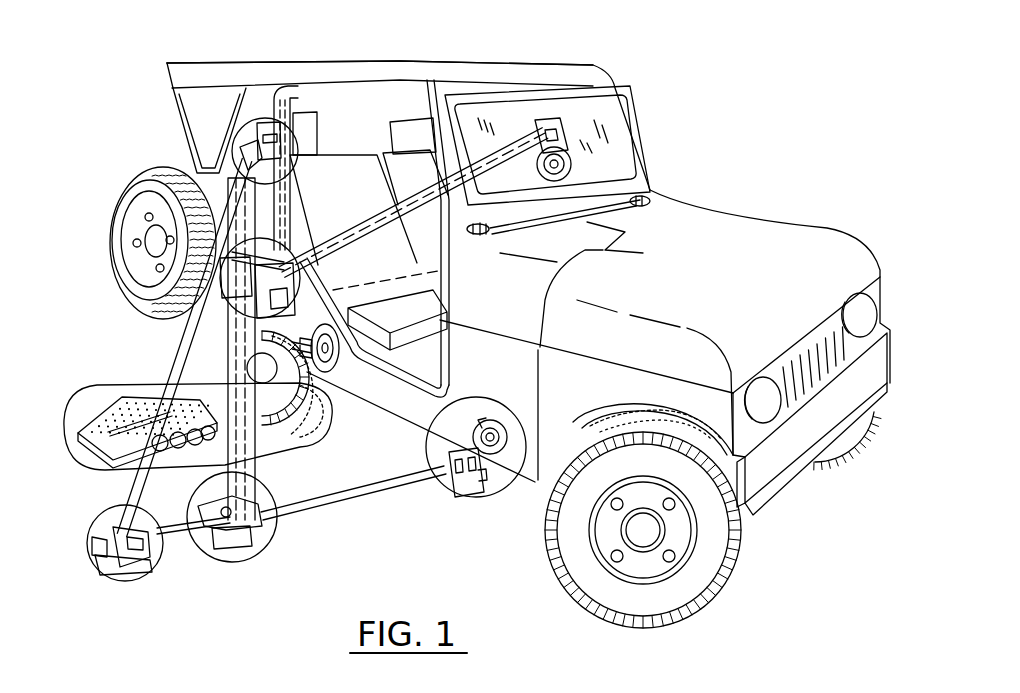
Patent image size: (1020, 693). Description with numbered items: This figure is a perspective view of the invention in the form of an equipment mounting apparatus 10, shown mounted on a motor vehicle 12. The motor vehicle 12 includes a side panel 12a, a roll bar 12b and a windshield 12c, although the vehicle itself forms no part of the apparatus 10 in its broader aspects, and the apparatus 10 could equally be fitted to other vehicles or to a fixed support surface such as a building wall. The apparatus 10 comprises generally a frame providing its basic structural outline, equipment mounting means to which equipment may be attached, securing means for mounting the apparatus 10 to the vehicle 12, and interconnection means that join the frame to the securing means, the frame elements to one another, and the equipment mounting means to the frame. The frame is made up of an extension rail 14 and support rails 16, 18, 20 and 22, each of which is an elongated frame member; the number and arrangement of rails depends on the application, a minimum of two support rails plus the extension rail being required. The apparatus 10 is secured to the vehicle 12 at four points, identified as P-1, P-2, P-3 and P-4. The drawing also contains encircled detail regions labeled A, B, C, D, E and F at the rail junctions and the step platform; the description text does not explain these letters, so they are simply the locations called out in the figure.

The equipment mounting apparatus 10 is at (120, 328).
The motor vehicle 12 is at (770, 220).
The side panel 12a is at (395, 413).
The roll bar 12b is at (293, 92).
The windshield 12c is at (600, 107).
The extension rail 14 is at (250, 470).
The support rail 16 is at (272, 428).
The support rail 18 is at (366, 500).
The support rail 20 is at (183, 338).
The support rail 22 is at (517, 147).
The lower mast attachment A is at (273, 538).
The rear brace foot attachment B is at (160, 563).
The carriage attachment C is at (312, 262).
The lower brace attachment D is at (460, 500).
The upper mast attachment E is at (287, 117).
The step platform F is at (127, 383).
The securing point P-1 is at (500, 410).
The securing point P-2 is at (303, 137).
The securing point P-3 is at (580, 164).
The securing point P-4 is at (340, 313).